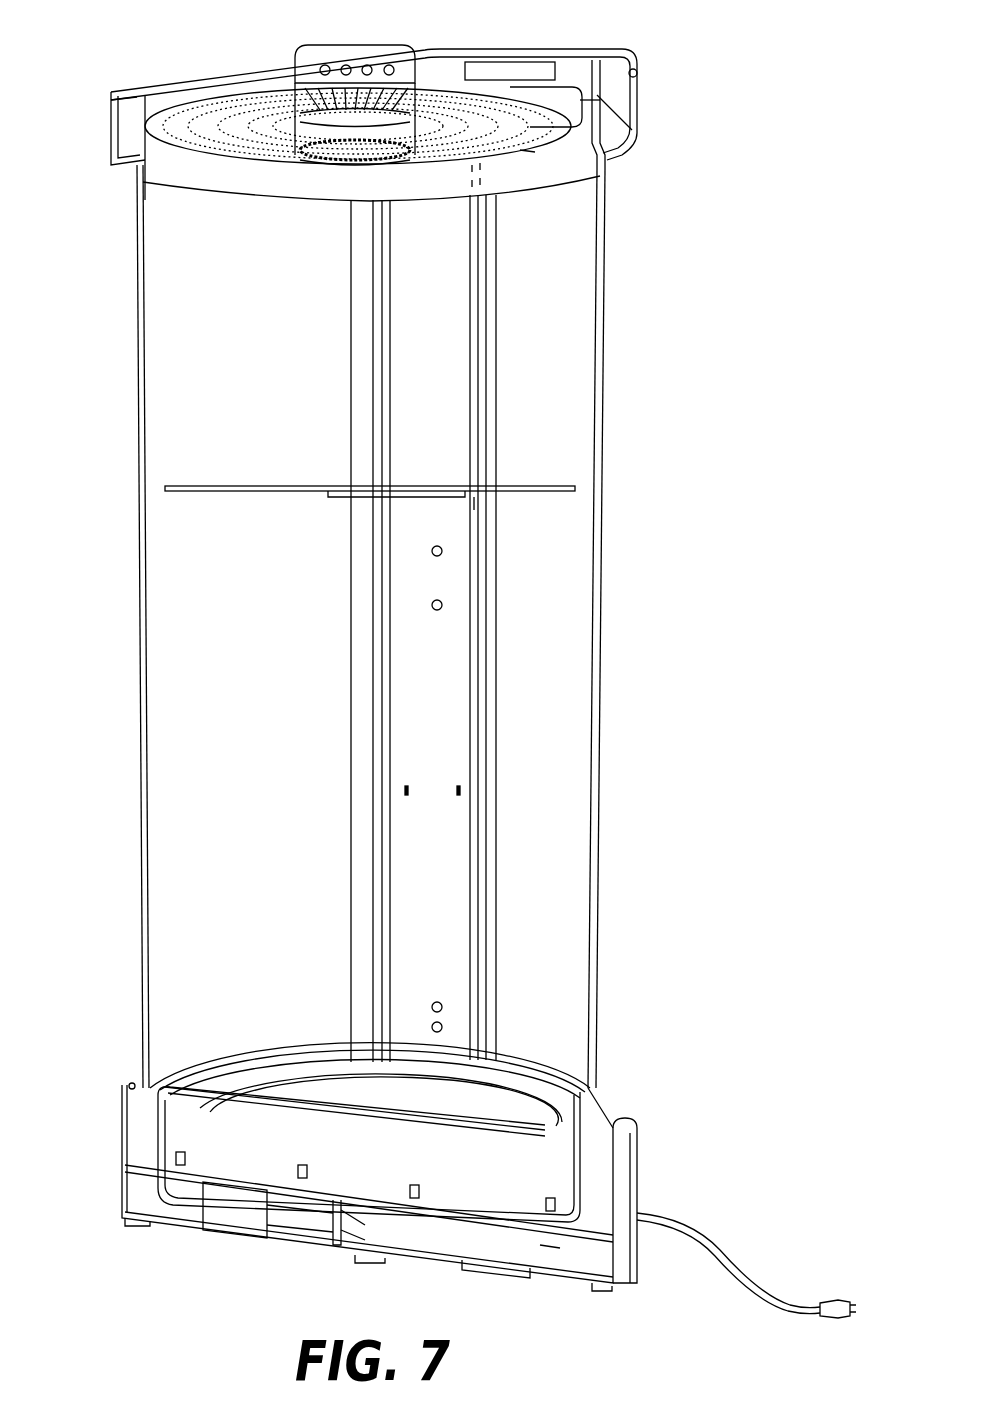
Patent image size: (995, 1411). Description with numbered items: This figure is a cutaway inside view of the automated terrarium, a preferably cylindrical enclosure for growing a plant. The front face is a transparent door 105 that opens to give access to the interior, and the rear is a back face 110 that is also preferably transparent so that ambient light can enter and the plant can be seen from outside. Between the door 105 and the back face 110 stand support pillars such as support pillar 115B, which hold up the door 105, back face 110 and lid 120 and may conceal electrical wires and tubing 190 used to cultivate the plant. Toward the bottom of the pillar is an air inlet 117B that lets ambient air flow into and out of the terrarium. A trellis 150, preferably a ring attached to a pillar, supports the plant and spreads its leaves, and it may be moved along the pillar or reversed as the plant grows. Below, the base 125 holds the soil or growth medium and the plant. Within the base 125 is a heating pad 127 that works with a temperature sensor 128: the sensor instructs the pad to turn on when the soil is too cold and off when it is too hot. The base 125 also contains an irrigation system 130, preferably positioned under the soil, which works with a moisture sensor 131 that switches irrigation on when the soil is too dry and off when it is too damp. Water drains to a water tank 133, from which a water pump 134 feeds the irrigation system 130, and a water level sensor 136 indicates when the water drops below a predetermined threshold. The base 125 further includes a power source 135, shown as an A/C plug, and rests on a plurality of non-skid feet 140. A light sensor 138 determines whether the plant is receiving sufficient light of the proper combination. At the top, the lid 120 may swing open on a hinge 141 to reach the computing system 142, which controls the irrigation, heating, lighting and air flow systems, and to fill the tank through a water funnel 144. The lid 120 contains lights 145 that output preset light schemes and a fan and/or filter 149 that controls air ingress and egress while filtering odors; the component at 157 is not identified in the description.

The transparent door 105 is at (142, 738).
The back face 110 is at (598, 812).
The support pillar 115B is at (428, 757).
The air inlet 117B is at (443, 1005).
The lid 120 is at (150, 88).
The base 125 is at (598, 1256).
The heating pad 127 is at (338, 1222).
The temperature sensor 128 is at (443, 1027).
The irrigation system 130 is at (132, 1083).
The moisture sensor 131 is at (302, 1163).
The water tank 133 is at (546, 1252).
The water pump 134 is at (231, 1218).
The power source 135 is at (770, 1302).
The water level sensor 136 is at (498, 1275).
The light sensor 138 is at (443, 552).
The feet 140 is at (138, 1226).
The hinge 141 is at (640, 73).
The computing system 142 is at (560, 72).
The water funnel 144 is at (595, 102).
The light 145 is at (148, 120).
The fan and/or filter 149 is at (268, 118).
The trellis 150 is at (510, 487).
The hub 157 is at (530, 150).
The tubing 190 is at (477, 504).